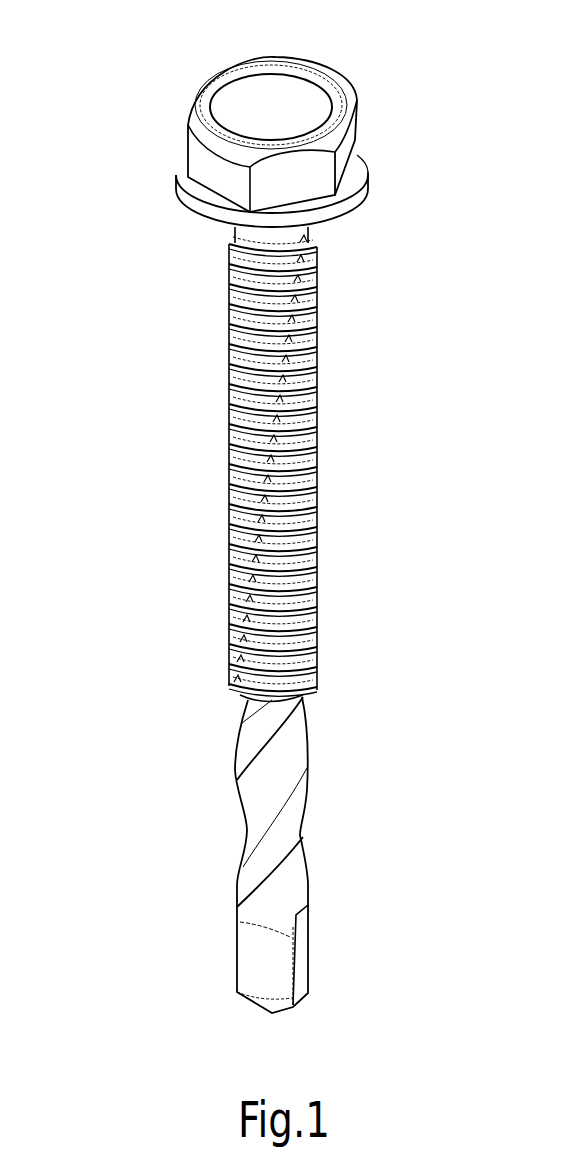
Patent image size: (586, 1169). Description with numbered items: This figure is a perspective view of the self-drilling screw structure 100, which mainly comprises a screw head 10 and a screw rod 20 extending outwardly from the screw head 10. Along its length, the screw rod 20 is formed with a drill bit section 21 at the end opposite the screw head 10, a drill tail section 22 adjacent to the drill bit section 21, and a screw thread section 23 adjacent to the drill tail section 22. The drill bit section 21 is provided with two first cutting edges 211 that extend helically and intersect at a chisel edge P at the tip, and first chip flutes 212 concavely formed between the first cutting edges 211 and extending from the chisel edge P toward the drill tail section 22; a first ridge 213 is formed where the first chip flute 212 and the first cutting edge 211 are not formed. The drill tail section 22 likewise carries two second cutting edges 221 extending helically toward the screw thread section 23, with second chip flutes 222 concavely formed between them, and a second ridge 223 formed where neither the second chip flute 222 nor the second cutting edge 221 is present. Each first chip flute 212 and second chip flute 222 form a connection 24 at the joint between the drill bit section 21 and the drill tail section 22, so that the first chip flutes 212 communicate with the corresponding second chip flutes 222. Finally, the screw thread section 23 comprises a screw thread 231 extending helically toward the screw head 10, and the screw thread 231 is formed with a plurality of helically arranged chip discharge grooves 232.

The self-drilling screw structure 100 is at (96, 121).
The screw head 10 is at (364, 117).
The screw rod 20 is at (458, 447).
The screw thread section 23 is at (410, 432).
The screw thread 231 is at (303, 505).
The chip discharge groove 232 is at (300, 468).
The drill tail section 22 is at (410, 712).
The second cutting edge 221 is at (287, 857).
The second chip flute 222 is at (287, 783).
The second ridge 223 is at (265, 725).
The connection 24 is at (240, 942).
The drill bit section 21 is at (410, 927).
The first cutting edge 211 is at (294, 980).
The first chip flute 212 is at (278, 959).
The first ridge 213 is at (300, 997).
The chisel edge P is at (272, 1013).